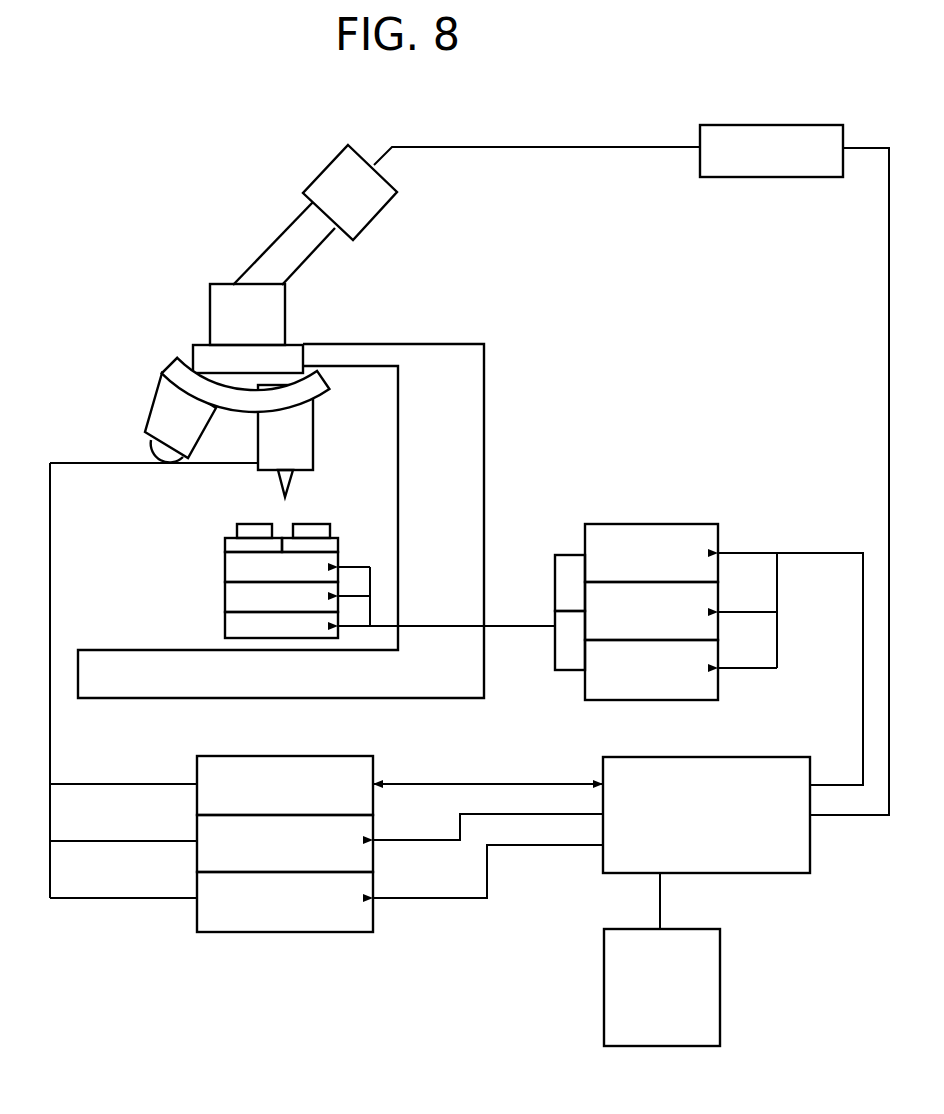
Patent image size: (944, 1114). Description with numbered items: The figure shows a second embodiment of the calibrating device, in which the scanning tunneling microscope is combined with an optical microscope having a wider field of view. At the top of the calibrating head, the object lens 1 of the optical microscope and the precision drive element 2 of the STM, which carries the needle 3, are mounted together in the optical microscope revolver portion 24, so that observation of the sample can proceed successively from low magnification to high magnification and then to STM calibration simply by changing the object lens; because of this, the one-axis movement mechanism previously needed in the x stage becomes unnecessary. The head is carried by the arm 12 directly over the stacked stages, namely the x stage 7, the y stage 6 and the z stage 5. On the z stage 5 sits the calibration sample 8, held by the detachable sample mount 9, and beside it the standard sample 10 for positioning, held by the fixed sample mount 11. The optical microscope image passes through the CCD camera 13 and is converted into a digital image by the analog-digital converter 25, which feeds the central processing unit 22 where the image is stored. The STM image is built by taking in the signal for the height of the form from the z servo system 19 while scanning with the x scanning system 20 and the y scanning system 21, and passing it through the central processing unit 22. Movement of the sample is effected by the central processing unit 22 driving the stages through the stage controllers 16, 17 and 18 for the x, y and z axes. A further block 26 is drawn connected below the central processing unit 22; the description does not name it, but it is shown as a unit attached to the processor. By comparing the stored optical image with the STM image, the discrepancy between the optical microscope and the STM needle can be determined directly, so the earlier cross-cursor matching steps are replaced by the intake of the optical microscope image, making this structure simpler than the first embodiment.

The object lens 1 is at (163, 413).
The precision drive device 2 is at (303, 436).
The needle 3 is at (288, 490).
The z stage 5 is at (228, 568).
The y stage 6 is at (230, 602).
The x stage 7 is at (258, 625).
The calibration sample 8 is at (255, 523).
The detachable sample mount 9 is at (225, 547).
The standard sample 10 is at (312, 523).
The fixed sample mount 11 is at (333, 547).
The arm 12 is at (430, 353).
The CCD camera 13 is at (335, 168).
The x stage controller 16 is at (588, 542).
The y stage controller 17 is at (593, 603).
The z stage controller 18 is at (588, 682).
The z servo system 19 is at (200, 772).
The x scanning system 20 is at (203, 828).
The y scanning system 21 is at (203, 890).
The central processing unit 22 is at (740, 763).
The optical microscope revolver portion 24 is at (172, 367).
The analog-digital converter 25 is at (770, 132).
The memory 26 is at (608, 983).